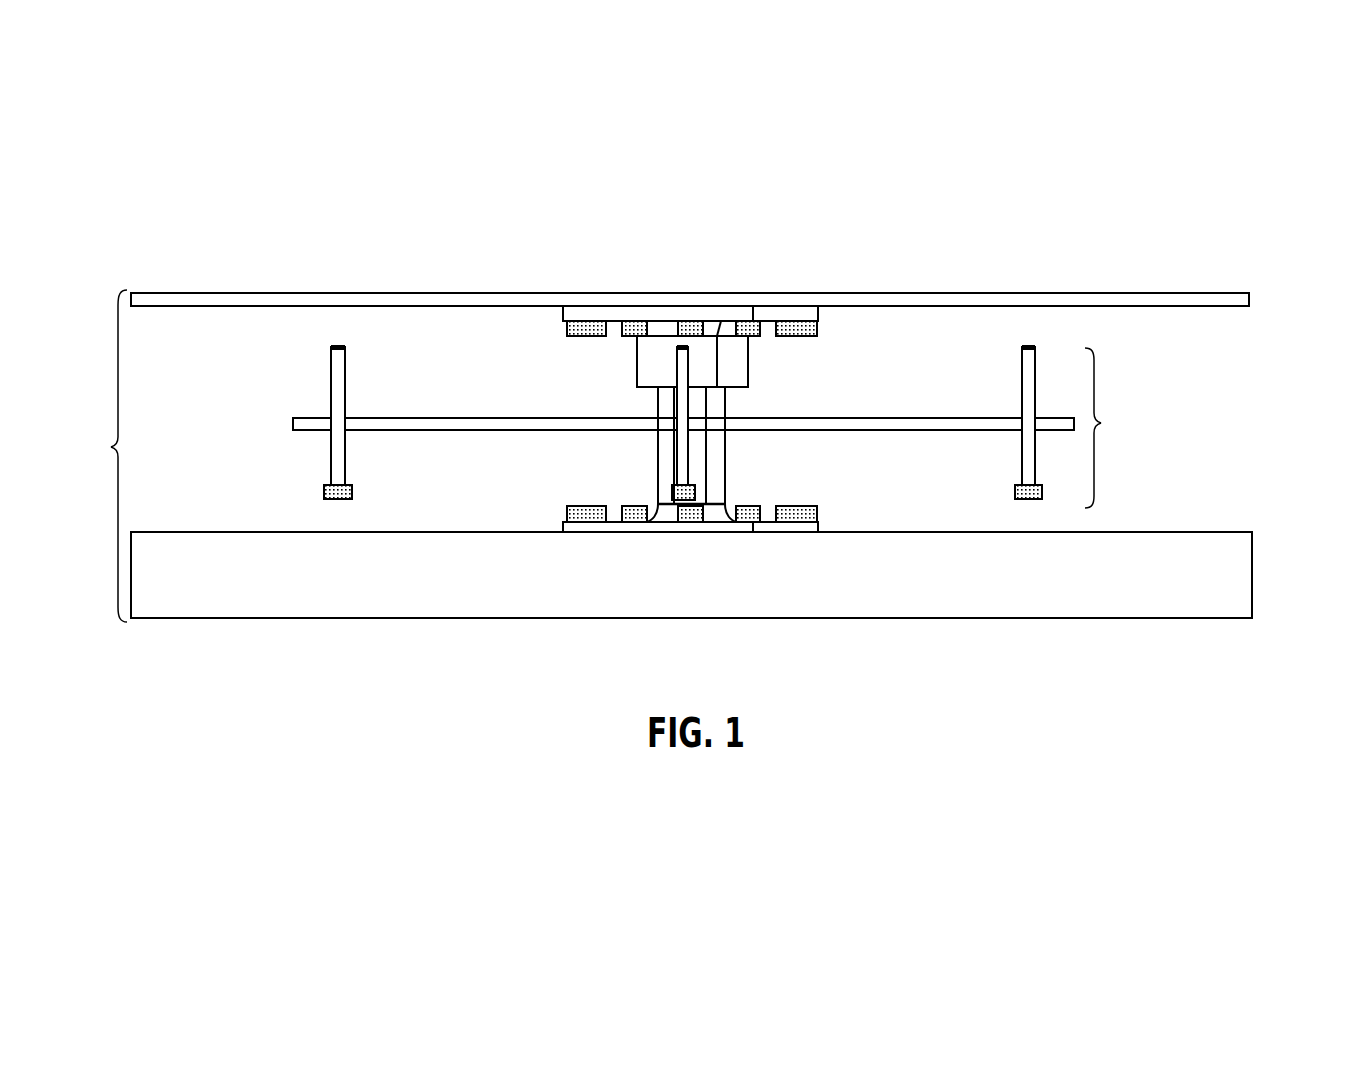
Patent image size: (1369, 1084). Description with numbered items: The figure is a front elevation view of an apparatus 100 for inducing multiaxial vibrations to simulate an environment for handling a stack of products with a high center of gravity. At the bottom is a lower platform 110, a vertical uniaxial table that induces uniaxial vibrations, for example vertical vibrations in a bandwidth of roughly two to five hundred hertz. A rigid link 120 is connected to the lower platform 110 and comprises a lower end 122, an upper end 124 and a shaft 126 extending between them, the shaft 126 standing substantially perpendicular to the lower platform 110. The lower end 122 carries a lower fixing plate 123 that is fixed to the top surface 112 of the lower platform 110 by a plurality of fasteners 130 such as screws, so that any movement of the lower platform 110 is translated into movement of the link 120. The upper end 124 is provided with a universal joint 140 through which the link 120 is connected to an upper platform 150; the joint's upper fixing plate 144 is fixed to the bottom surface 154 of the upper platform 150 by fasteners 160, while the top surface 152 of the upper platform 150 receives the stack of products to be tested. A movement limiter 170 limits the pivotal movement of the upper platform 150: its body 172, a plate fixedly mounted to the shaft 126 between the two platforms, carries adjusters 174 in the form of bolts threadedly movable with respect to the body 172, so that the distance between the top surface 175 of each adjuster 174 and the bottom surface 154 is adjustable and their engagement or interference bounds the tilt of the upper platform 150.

The apparatus 100 is at (93, 456).
The lower platform 110 is at (713, 588).
The top surface 112 is at (1143, 532).
The link 120 is at (748, 406).
The lower end 122 is at (826, 520).
The lower fixing plate 123 is at (563, 528).
The upper end 124 is at (558, 331).
The shaft 126 is at (725, 480).
The fasteners 130 is at (636, 505).
The universal joint 140 is at (749, 370).
The upper fixing plate 144 is at (752, 310).
The upper platform 150 is at (1249, 302).
The top surface 152 is at (1143, 293).
The bottom surface 154 is at (1162, 307).
The fasteners 160 is at (817, 328).
The movement limiter 170 is at (1116, 428).
The body 172 is at (900, 418).
The adjuster 174 is at (331, 358).
The top surface 175 is at (336, 346).